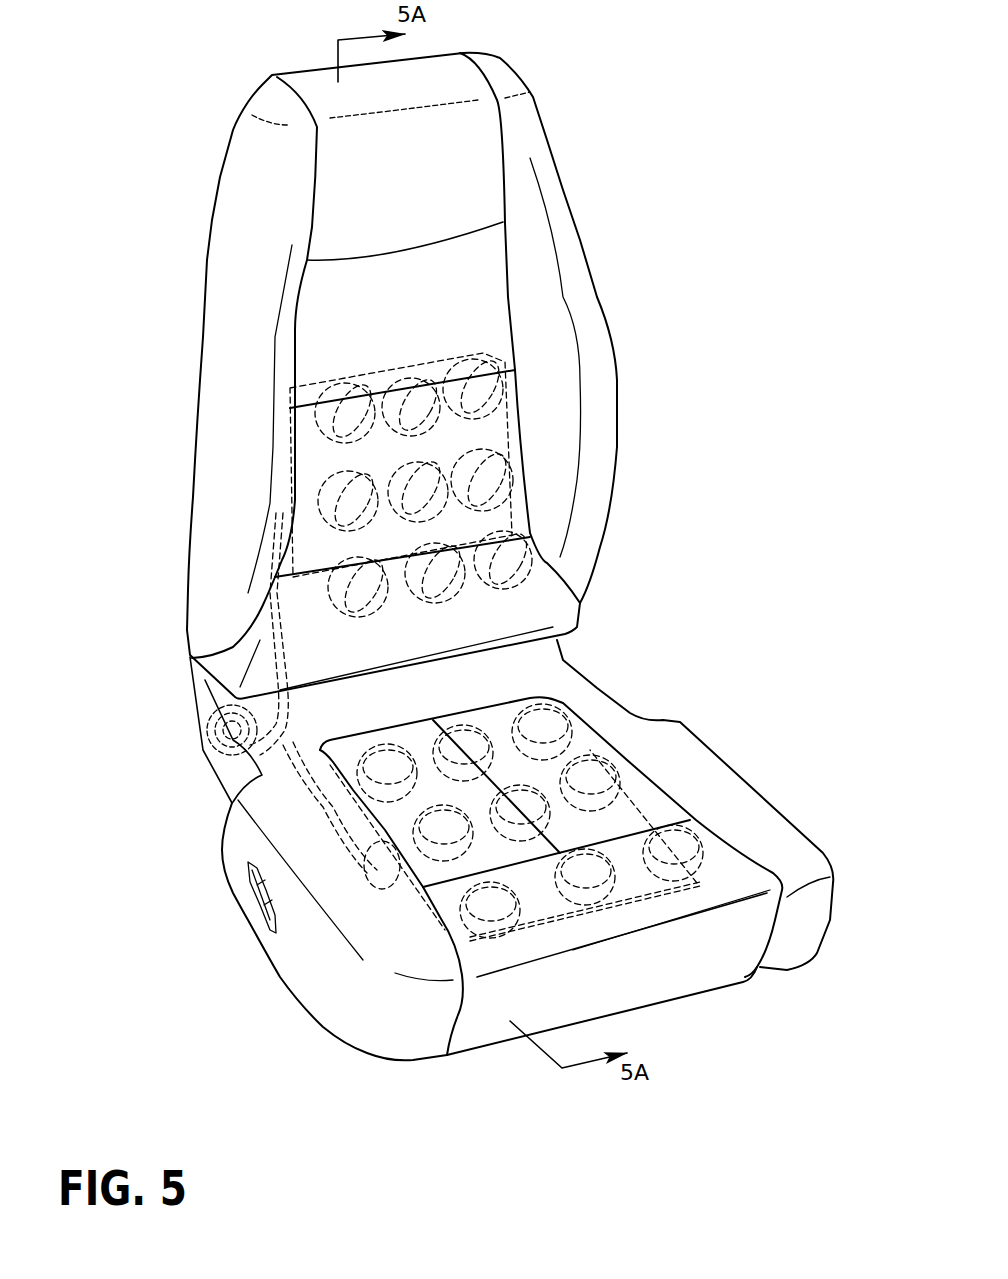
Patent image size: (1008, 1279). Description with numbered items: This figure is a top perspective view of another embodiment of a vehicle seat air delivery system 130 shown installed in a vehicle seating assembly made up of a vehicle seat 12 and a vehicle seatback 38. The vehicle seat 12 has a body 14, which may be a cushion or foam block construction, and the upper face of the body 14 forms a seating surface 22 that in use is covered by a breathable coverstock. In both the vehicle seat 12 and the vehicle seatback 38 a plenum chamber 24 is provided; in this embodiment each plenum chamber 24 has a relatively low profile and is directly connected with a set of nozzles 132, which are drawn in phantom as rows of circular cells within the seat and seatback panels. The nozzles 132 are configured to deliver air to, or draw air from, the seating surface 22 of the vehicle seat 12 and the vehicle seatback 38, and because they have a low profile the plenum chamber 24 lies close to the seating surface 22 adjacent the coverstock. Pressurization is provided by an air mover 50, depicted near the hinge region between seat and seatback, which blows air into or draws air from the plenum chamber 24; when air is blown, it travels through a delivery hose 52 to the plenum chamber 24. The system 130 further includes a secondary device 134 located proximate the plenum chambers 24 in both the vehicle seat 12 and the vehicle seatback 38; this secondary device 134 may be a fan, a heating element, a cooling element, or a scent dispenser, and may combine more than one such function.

The vehicle seat 12 is at (733, 750).
The body 14 is at (343, 865).
The seating surface 22 is at (557, 851).
The plenum chamber 24 is at (443, 355).
The vehicle seatback 38 is at (596, 204).
The air mover 50 is at (206, 748).
The delivery hose 52 is at (312, 758).
The vehicle seat air delivery system 130 is at (663, 338).
The nozzles 132 is at (513, 480).
The secondary device 134 is at (264, 510).